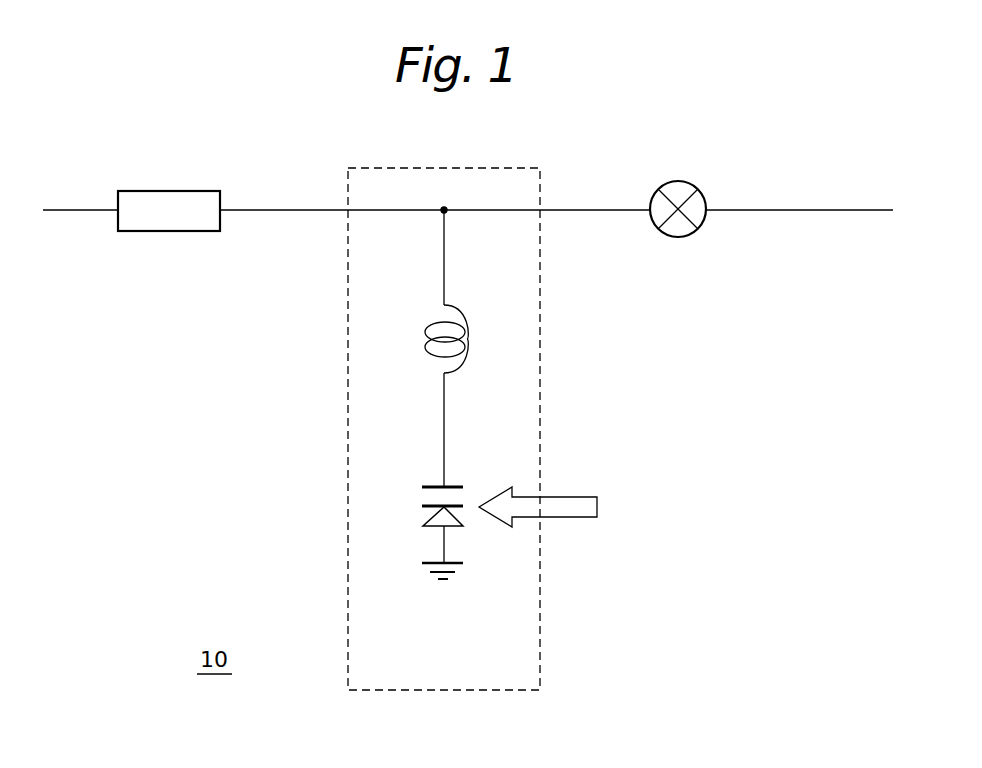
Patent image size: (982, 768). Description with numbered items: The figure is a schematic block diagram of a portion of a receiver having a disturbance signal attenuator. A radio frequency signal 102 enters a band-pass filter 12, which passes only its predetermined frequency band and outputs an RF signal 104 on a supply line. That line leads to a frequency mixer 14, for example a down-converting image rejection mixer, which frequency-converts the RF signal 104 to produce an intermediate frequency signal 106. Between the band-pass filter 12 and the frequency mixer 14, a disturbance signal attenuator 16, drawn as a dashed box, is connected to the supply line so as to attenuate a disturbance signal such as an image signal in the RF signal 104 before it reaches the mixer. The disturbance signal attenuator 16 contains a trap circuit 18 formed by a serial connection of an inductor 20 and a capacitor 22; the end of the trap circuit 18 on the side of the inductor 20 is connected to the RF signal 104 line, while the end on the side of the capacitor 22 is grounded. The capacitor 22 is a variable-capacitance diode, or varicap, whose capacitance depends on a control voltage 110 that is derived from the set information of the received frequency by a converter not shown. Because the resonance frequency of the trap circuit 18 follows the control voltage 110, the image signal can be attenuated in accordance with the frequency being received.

The band-pass filter 12 is at (178, 190).
The frequency mixer 14 is at (699, 189).
The disturbance signal attenuator 16 is at (540, 656).
The trap circuit 18 is at (456, 393).
The inductor 20 is at (492, 337).
The capacitor 22 is at (492, 479).
The radio frequency signal 102 is at (78, 213).
The RF signal 104 is at (258, 210).
The intermediate frequency signal 106 is at (811, 213).
The control voltage 110 is at (598, 507).